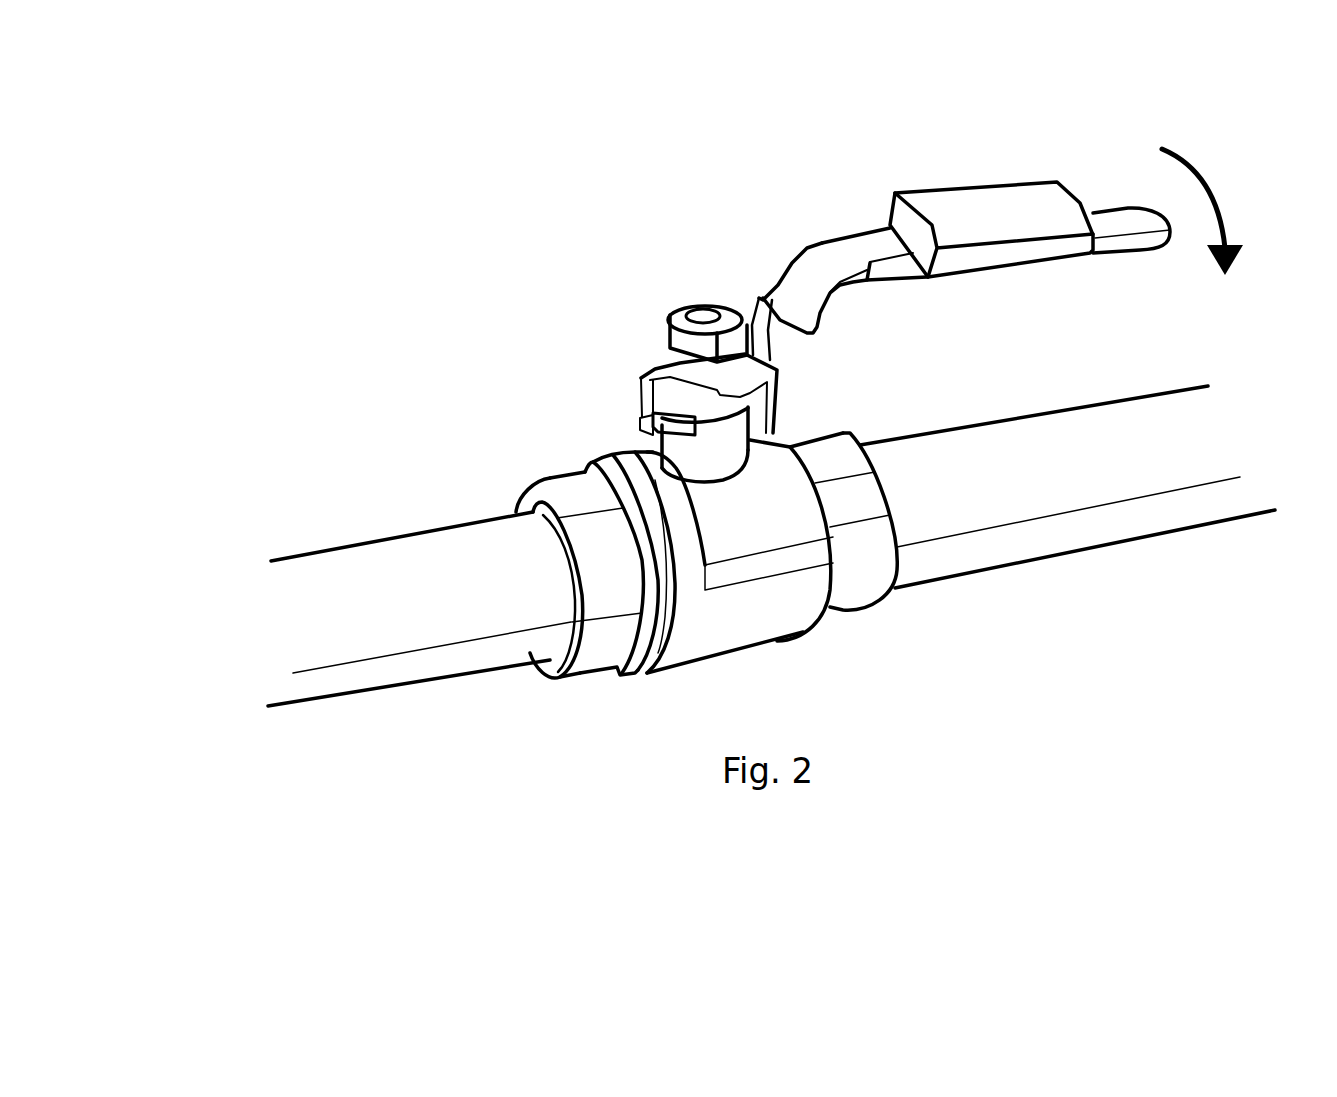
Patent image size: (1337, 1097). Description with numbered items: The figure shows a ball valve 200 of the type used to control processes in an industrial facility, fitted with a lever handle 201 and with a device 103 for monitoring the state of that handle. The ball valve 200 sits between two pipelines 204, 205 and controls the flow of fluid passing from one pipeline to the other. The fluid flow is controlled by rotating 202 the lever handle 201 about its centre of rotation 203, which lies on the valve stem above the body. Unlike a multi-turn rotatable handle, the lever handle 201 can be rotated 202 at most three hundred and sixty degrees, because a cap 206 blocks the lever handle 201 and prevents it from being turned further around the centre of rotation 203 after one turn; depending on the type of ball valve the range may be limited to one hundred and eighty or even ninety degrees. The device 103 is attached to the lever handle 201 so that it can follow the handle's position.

The ball valve 200 is at (470, 292).
The device 103 is at (1012, 195).
The lever handle 201 is at (1120, 218).
The rotating 202 is at (1212, 196).
The centre of rotation 203 is at (705, 312).
The pipeline 204 is at (327, 565).
The pipeline 205 is at (1106, 422).
The cap 206 is at (642, 418).